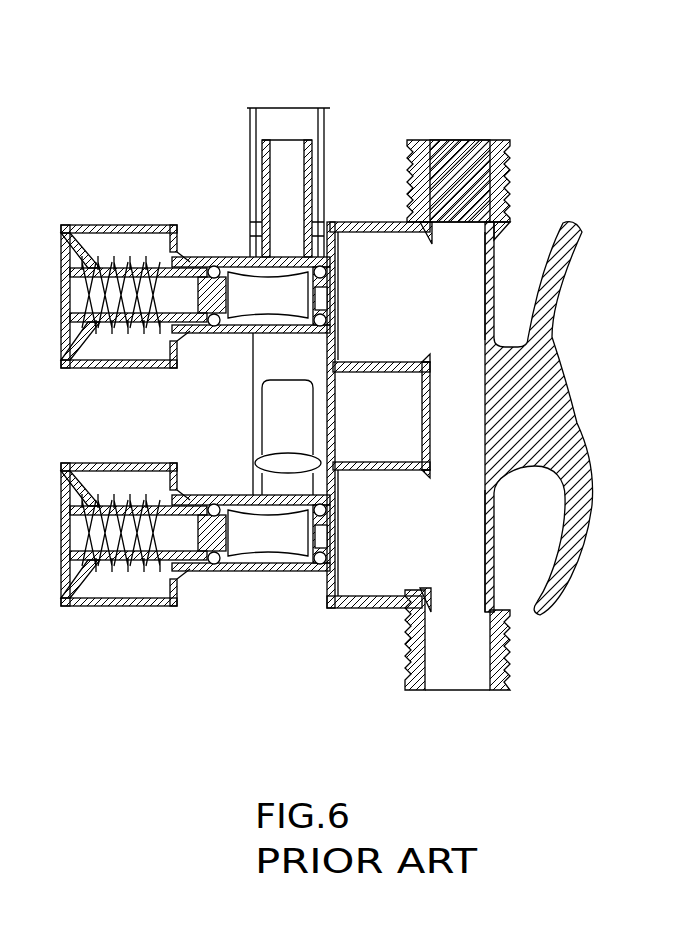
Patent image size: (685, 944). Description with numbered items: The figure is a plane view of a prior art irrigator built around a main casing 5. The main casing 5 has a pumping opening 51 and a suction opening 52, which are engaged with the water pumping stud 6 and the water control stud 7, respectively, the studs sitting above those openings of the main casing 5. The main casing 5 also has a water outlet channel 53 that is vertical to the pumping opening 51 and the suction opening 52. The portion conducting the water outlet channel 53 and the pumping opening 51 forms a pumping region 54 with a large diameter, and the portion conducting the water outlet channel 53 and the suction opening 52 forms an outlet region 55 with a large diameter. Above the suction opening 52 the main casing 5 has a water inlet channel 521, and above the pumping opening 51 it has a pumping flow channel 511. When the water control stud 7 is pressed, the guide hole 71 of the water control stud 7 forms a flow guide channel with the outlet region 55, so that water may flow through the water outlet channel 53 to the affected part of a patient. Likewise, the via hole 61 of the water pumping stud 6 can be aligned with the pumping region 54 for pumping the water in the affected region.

The main casing 5 is at (478, 383).
The pumping opening 51 is at (251, 181).
The pumping flow channel 511 is at (290, 158).
The suction opening 52 is at (246, 498).
The water inlet channel 521 is at (283, 443).
The water outlet channel 53 is at (465, 418).
The pumping region 54 is at (352, 285).
The outlet region 55 is at (377, 578).
The water pumping stud 6 is at (213, 292).
The via hole 61 is at (267, 300).
The water control stud 7 is at (213, 527).
The guide hole 71 is at (264, 542).